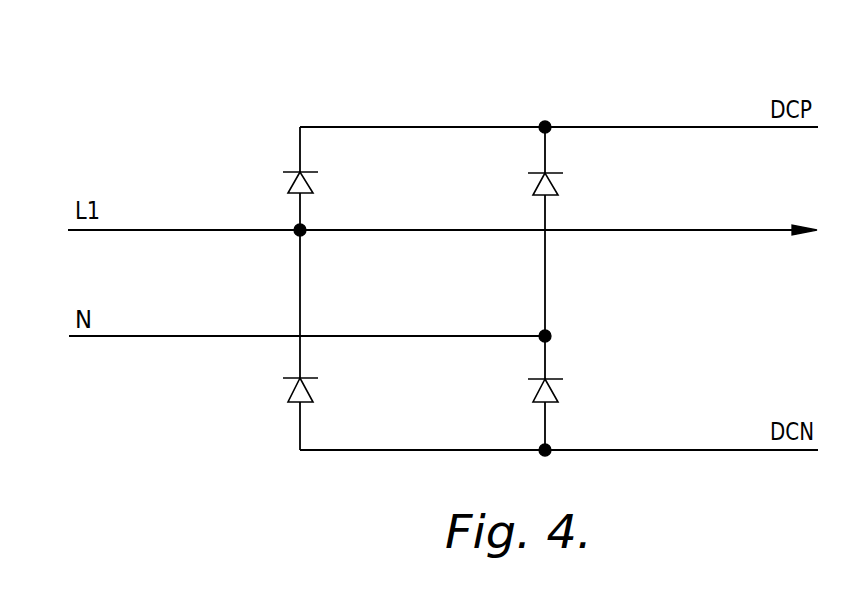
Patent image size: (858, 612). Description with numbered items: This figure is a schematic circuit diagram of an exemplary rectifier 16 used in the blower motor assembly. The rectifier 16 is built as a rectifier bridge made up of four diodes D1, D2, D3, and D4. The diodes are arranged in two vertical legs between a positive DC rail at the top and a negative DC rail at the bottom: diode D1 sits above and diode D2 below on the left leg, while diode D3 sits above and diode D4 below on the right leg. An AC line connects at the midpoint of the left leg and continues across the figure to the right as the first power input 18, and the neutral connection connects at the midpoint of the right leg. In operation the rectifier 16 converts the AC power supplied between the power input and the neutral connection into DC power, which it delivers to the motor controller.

The rectifier 16 is at (550, 88).
The first power input 18 is at (782, 216).
The diode D1 is at (319, 186).
The diode D2 is at (320, 391).
The diode D3 is at (567, 185).
The diode D4 is at (567, 393).